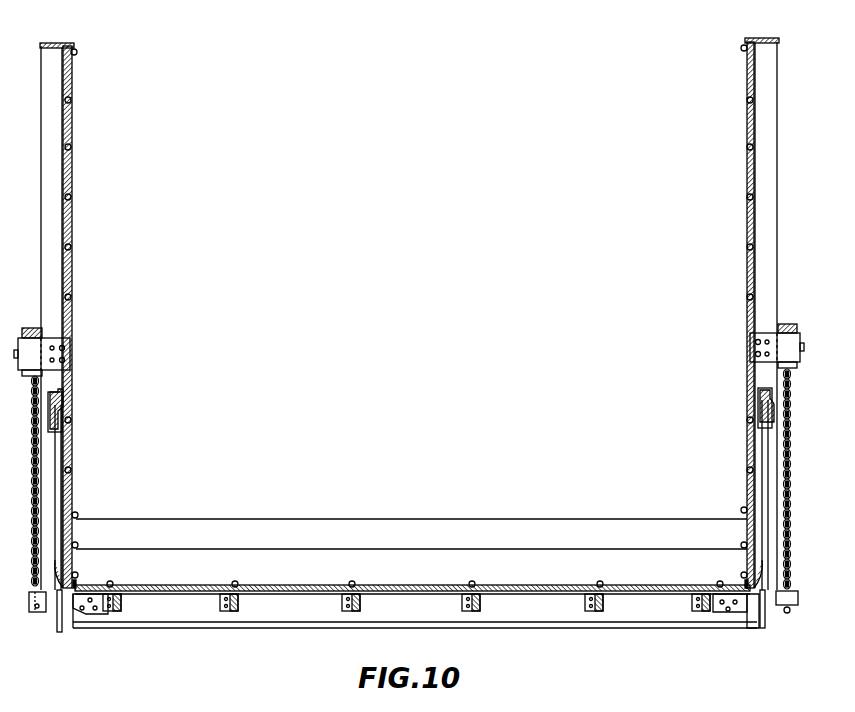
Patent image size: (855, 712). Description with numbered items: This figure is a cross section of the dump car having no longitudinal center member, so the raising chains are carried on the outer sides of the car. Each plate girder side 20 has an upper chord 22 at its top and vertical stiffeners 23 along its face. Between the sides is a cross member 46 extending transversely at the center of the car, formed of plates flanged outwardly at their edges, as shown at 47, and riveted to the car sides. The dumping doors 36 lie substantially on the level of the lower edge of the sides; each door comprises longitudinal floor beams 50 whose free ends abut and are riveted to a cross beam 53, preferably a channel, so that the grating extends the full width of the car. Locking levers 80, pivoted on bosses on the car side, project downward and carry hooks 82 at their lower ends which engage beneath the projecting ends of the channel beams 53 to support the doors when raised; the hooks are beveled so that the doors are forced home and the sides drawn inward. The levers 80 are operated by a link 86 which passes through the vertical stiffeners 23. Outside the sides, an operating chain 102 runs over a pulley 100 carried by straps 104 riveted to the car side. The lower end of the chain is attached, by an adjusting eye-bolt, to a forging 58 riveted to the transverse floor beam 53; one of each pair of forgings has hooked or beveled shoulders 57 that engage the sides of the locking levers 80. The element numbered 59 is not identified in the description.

The plate girder side 20 is at (74, 134).
The upper chord 22 is at (755, 40).
The vertical stiffeners 23 is at (63, 232).
The dumping doors 36 is at (412, 578).
The cross member 46 is at (411, 534).
The outwardly flanged edges 47 is at (78, 517).
The floor beams 50 is at (480, 603).
The cross beam 53 is at (415, 611).
The hooked or beveled shoulders 57 is at (60, 632).
The forgings 58 is at (745, 606).
The lower sprocket 59 is at (30, 612).
The locking levers 80 is at (61, 480).
The hooks 82 is at (766, 614).
The link 86 is at (62, 404).
The pulley 100 is at (42, 333).
The operating chain 102 is at (783, 376).
The straps 104 is at (50, 356).